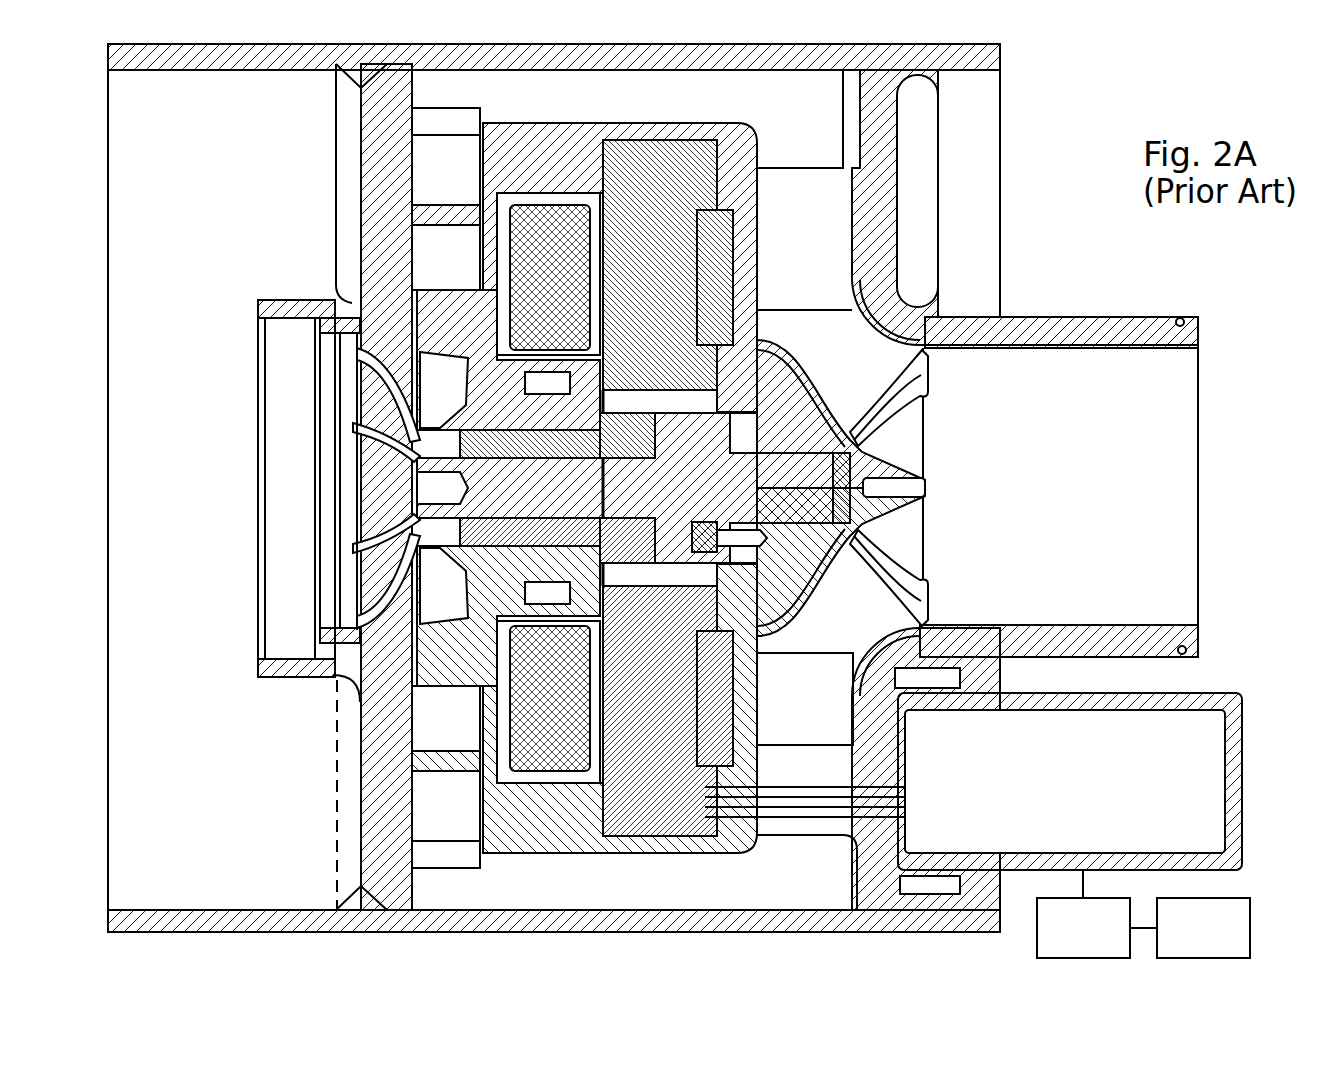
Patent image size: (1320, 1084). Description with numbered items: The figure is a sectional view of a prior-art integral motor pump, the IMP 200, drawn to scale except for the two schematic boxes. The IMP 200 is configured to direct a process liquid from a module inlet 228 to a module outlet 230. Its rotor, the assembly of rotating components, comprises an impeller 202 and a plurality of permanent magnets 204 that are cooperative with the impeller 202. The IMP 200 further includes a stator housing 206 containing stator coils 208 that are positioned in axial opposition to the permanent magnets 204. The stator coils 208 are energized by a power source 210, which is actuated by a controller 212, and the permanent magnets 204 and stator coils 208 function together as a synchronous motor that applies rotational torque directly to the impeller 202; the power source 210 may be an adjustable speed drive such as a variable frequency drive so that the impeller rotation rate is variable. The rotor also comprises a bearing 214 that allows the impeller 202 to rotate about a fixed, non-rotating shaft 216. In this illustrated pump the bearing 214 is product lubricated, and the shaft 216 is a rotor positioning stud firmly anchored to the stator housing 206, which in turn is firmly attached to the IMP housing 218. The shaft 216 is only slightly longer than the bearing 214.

The IMP 200 is at (1076, 137).
The impeller 202 is at (506, 488).
The permanent magnets 204 is at (548, 488).
The stator housing 206 is at (705, 123).
The stator coils 208 is at (668, 488).
The power source 210 is at (973, 813).
The controller 212 is at (1190, 928).
The bearing 214 is at (440, 435).
The shaft 216 is at (672, 488).
The IMP housing 218 is at (200, 64).
The module inlet 228 is at (256, 492).
The module outlet 230 is at (1059, 487).